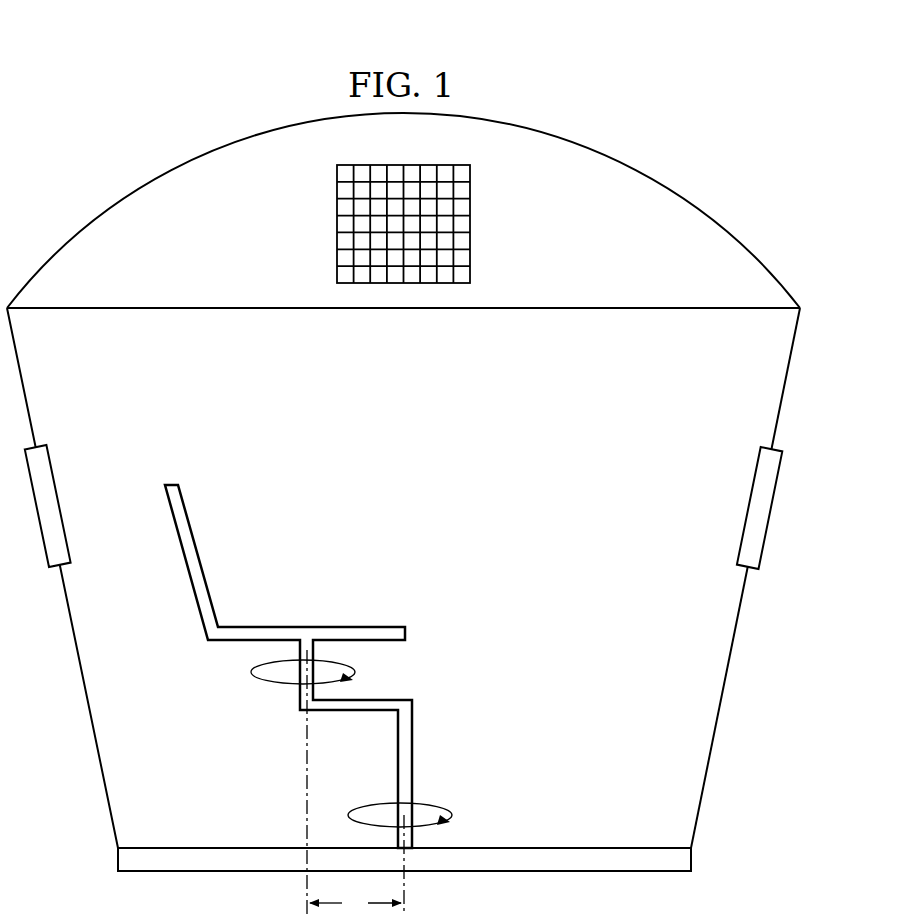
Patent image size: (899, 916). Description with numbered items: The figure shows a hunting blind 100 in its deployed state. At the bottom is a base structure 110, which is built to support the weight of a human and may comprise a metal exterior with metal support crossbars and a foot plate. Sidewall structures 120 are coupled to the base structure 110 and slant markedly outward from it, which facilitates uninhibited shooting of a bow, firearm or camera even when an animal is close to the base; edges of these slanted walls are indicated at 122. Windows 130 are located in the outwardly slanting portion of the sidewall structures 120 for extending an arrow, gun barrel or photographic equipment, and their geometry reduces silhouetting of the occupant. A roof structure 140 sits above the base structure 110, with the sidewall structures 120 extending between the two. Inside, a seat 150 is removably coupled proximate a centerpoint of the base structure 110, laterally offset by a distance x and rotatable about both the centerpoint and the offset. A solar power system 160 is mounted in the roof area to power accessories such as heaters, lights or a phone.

The hunting blind 100 is at (164, 64).
The base structure 110 is at (692, 857).
The sidewall structures 120 is at (719, 710).
The wall edge 122 is at (600, 307).
The windows 130 is at (773, 508).
The roof structure 140 is at (625, 161).
The seat 150 is at (437, 707).
The solar power system 160 is at (334, 189).